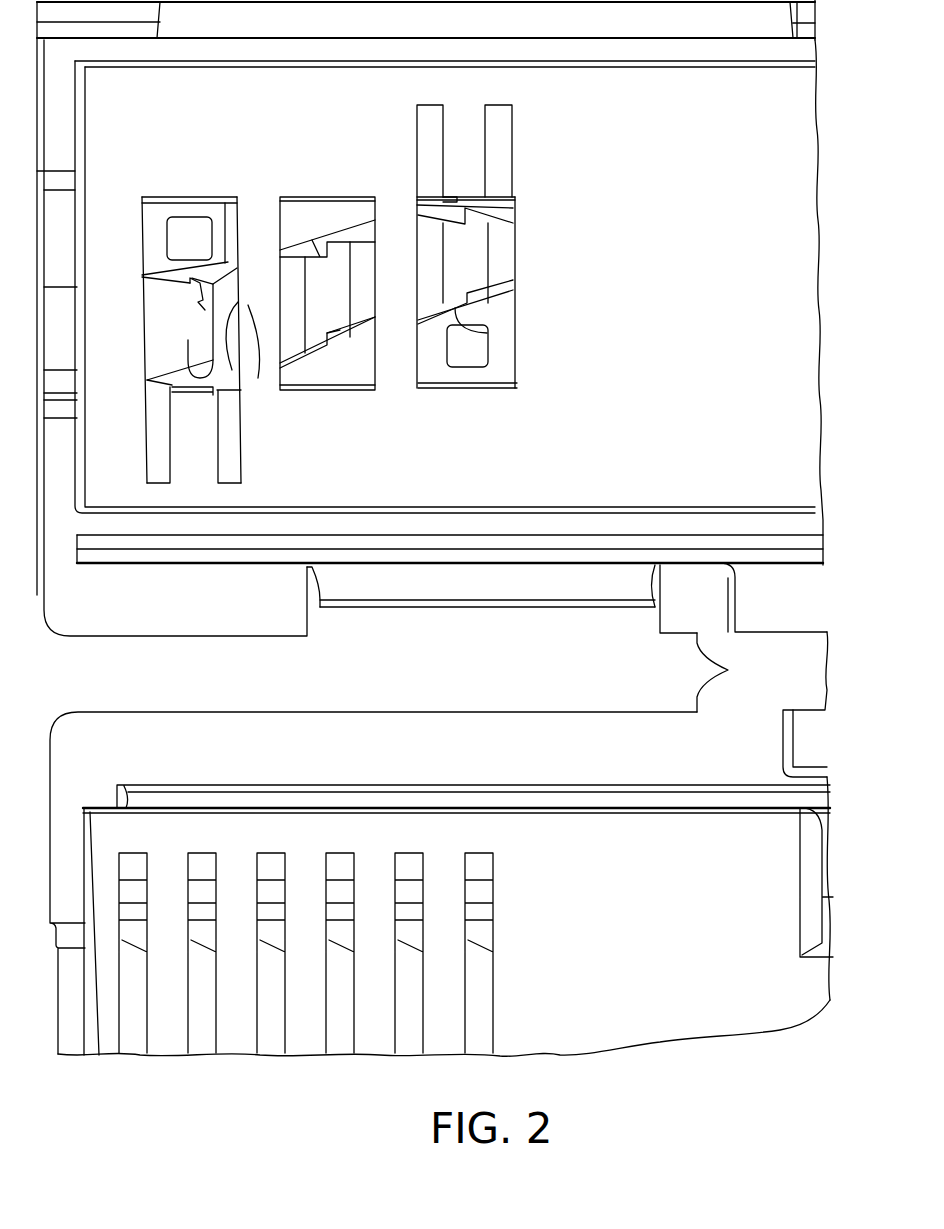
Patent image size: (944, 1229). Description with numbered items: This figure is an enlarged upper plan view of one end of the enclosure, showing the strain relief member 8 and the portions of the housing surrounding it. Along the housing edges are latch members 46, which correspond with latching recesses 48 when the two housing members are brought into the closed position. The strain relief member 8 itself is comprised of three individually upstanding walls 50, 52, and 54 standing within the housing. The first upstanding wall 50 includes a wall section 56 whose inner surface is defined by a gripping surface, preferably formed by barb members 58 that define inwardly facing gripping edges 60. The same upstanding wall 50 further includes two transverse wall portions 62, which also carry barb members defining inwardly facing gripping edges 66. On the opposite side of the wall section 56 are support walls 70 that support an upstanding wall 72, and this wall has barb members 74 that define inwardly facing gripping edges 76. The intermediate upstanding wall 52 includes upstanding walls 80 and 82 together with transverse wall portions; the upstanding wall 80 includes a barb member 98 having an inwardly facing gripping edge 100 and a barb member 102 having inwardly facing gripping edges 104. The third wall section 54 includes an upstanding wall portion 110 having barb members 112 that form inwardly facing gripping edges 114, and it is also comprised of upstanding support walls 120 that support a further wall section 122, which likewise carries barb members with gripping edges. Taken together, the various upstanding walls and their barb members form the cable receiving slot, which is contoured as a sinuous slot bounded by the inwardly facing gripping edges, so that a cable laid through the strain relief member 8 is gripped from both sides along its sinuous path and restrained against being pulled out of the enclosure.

The strain relief member 8 is at (570, 210).
The latch members 46 is at (452, 590).
The latching recesses 48 is at (408, 753).
The upstanding wall 50 is at (162, 190).
The intermediate upstanding wall 52 is at (316, 400).
The upstanding wall 54 is at (462, 402).
The wall section 56 is at (217, 212).
The barb members 58 is at (230, 267).
The inwardly facing gripping edges 60 is at (237, 275).
The transverse wall portions 62 is at (165, 368).
The inwardly facing gripping edges 66 is at (178, 326).
The support walls 70 is at (157, 463).
The upstanding wall 72 is at (140, 493).
The barb members 74 is at (222, 372).
The inwardly facing gripping edges 76 is at (230, 335).
The upstanding wall 80 is at (358, 373).
The upstanding wall 82 is at (352, 200).
The barb member 98 is at (300, 353).
The inwardly facing gripping edge 100 is at (330, 353).
The barb member 102 is at (355, 332).
The inwardly facing gripping edges 104 is at (376, 328).
The upstanding wall portion 110 is at (507, 350).
The barb members 112 is at (487, 333).
The inwardly facing gripping edges 114 is at (467, 283).
The upstanding support walls 120 is at (430, 150).
The wall section 122 is at (457, 200).